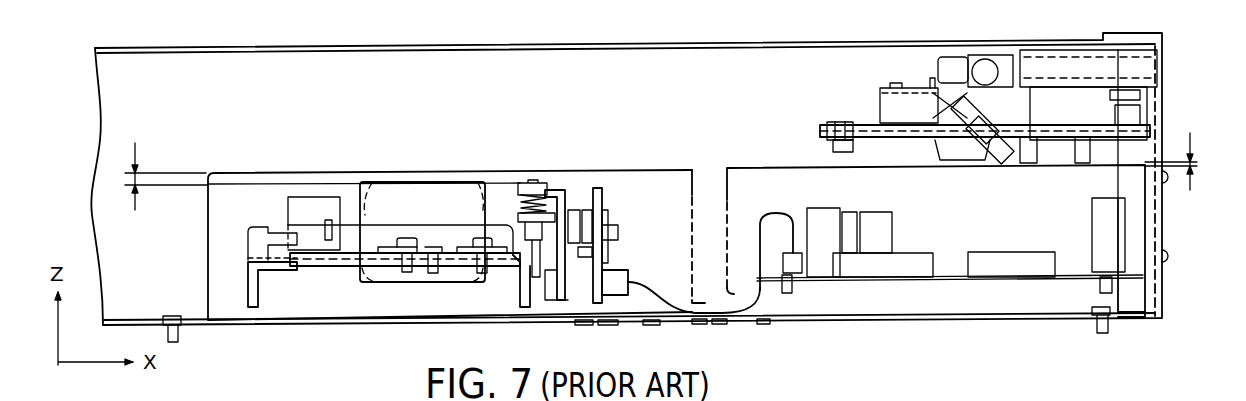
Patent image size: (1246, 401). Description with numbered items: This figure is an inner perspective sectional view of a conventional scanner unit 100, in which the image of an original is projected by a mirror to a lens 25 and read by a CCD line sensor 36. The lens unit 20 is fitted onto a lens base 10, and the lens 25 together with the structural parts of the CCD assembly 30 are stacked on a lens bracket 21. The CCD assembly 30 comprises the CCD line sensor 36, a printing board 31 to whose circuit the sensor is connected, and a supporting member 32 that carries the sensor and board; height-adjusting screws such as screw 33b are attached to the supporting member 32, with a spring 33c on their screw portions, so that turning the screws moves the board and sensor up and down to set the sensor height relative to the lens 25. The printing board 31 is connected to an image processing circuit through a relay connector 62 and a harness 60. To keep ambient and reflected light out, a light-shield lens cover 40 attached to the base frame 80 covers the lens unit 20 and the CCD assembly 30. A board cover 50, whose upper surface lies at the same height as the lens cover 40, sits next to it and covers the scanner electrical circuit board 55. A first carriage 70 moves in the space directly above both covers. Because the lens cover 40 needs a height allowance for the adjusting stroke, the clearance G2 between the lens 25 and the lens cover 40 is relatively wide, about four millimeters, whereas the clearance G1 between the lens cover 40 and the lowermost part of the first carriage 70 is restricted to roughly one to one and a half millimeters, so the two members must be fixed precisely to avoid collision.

The lens base 10 is at (258, 302).
The lens unit 20 is at (362, 162).
The lens bracket 21 is at (248, 245).
The lens 25 is at (418, 185).
The CCD assembly 30 is at (642, 205).
The printing board 31 is at (598, 188).
The supporting member 32 is at (558, 190).
The height-adjusting screw 33b is at (540, 182).
The spring 33c is at (518, 200).
The CCD line sensor 36 is at (555, 232).
The lens cover 40 is at (255, 173).
The board cover 50 is at (772, 167).
The scanner electrical circuit board 55 is at (953, 277).
The harness 60 is at (762, 305).
The relay connector 62 is at (626, 272).
The first carriage 70 is at (830, 95).
The base frame 80 is at (780, 40).
The scanner unit 100 is at (1048, 27).
The clearance G1 is at (1187, 161).
The clearance G2 is at (150, 176).